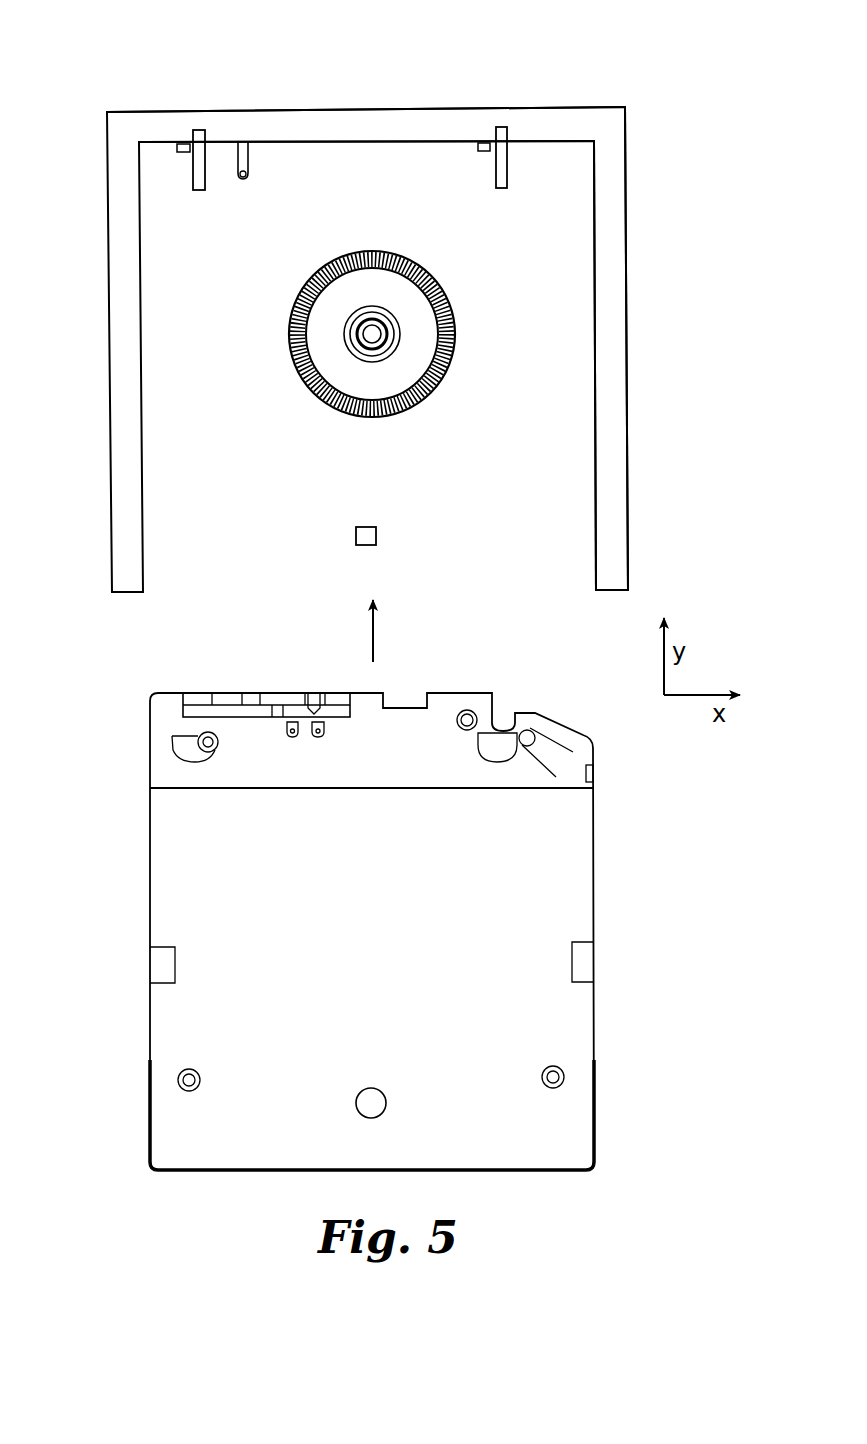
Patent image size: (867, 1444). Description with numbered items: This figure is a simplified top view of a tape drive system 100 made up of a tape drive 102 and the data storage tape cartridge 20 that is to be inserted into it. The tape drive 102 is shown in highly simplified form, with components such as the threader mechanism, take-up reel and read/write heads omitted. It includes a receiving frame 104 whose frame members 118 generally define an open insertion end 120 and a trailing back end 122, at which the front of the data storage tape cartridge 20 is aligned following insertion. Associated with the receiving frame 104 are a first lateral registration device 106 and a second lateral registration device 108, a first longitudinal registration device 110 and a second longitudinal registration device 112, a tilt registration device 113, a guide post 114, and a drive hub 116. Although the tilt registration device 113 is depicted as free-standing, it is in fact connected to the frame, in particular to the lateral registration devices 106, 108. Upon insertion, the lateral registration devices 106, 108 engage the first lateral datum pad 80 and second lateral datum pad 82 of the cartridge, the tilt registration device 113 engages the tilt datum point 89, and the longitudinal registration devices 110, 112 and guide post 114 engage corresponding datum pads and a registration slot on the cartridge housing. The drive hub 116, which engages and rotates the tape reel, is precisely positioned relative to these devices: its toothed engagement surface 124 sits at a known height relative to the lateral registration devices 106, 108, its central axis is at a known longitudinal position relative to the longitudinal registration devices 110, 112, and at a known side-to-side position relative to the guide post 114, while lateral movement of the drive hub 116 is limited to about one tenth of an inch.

The data storage tape cartridge 20 is at (137, 752).
The first lateral datum pad 80 is at (497, 748).
The second lateral datum pad 82 is at (200, 755).
The tilt datum point 89 is at (372, 1095).
The tape drive system 100 is at (600, 53).
The tape drive 102 is at (160, 102).
The receiving frame 104 is at (628, 275).
The first lateral registration device 106 is at (503, 175).
The second lateral registration device 108 is at (203, 178).
The first longitudinal registration device 110 is at (482, 150).
The second longitudinal registration device 112 is at (182, 151).
The tilt registration device 113 is at (366, 530).
The guide post 114 is at (249, 162).
The drive hub 116 is at (432, 278).
The frame members 118 is at (133, 521).
The insertion end 120 is at (594, 507).
The back end 122 is at (362, 143).
The engagement surface 124 is at (430, 386).